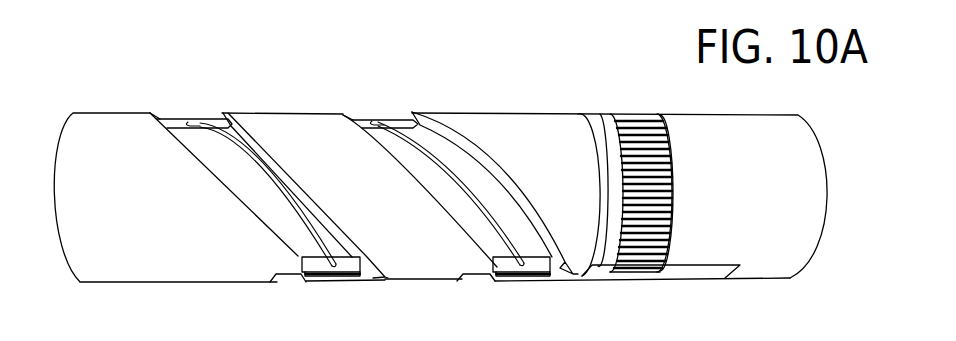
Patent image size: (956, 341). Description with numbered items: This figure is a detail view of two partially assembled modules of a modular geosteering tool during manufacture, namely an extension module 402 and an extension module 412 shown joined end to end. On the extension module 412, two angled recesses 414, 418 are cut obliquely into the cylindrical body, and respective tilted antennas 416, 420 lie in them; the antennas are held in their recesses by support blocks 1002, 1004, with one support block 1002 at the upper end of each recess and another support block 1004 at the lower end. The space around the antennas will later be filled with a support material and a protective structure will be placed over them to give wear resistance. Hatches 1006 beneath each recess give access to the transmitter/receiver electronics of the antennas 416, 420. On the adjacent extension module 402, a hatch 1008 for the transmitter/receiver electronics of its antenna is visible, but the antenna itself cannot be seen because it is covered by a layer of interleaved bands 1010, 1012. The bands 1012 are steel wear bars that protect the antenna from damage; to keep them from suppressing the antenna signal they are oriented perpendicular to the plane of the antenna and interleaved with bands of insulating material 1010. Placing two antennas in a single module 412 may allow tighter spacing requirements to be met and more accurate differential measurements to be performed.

The extension module 402 is at (735, 118).
The extension module 412 is at (105, 118).
The angled recess 414 is at (255, 152).
The tilted antenna 416 is at (235, 162).
The angled recess 418 is at (460, 142).
The tilted antenna 420 is at (438, 158).
The support block 1002 is at (207, 118).
The support block 1004 is at (350, 275).
The hatch 1006 is at (295, 278).
The hatch 1008 is at (692, 276).
The band of insulating material 1010 is at (668, 228).
The steel wear bar 1012 is at (667, 187).